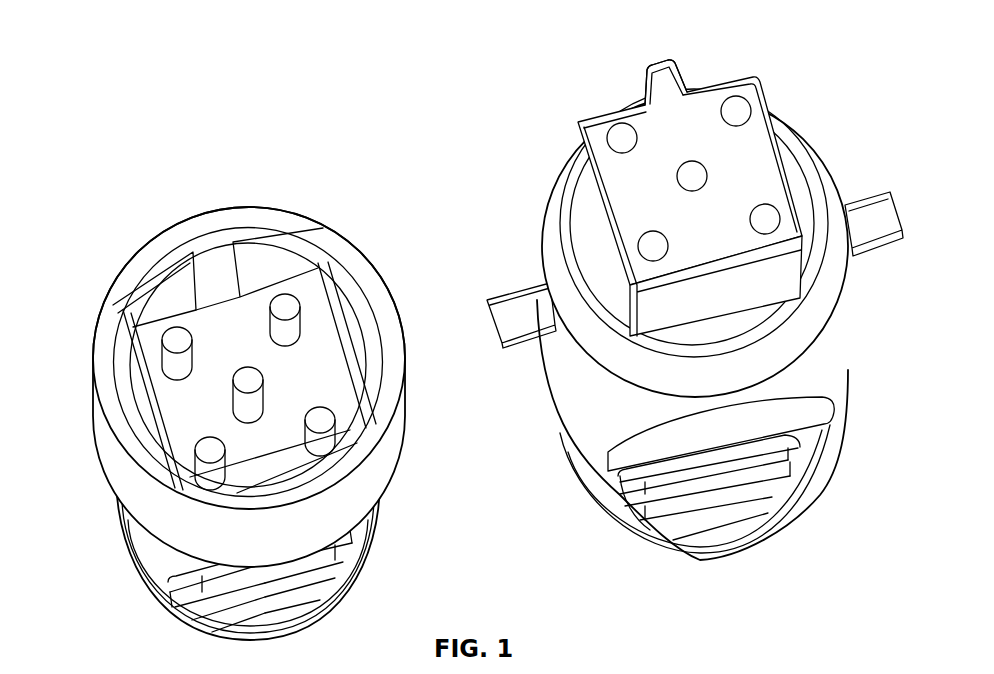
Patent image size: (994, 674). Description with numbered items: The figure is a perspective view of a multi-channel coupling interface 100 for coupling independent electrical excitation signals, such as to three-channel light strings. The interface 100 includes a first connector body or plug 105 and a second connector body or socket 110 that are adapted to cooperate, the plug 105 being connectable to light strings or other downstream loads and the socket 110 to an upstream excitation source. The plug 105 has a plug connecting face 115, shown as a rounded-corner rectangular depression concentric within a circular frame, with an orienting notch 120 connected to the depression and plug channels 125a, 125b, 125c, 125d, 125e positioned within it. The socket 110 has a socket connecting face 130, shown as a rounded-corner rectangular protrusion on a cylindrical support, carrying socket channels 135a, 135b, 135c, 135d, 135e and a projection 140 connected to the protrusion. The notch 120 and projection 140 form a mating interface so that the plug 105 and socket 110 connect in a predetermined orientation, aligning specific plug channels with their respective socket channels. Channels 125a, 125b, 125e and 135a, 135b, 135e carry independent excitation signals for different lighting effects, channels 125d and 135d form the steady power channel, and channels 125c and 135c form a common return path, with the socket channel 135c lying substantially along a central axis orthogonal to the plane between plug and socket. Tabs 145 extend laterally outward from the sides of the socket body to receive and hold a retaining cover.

The multi-channel coupling interface 100 is at (123, 127).
The plug 105 is at (105, 451).
The socket 110 is at (695, 324).
The plug connecting face 115 is at (277, 291).
The orienting notch 120 is at (220, 283).
The plug channel 125a is at (178, 342).
The plug channel 125b is at (293, 305).
The plug channel 125c is at (246, 381).
The plug channel 125d is at (210, 452).
The plug channel 125e is at (323, 418).
The socket connecting face 130 is at (718, 93).
The socket channel 135a is at (620, 138).
The socket channel 135b is at (743, 108).
The socket channel 135c is at (690, 178).
The socket channel 135d is at (652, 250).
The socket channel 135e is at (767, 222).
The projection 140 is at (662, 72).
The tabs 145 is at (503, 300).